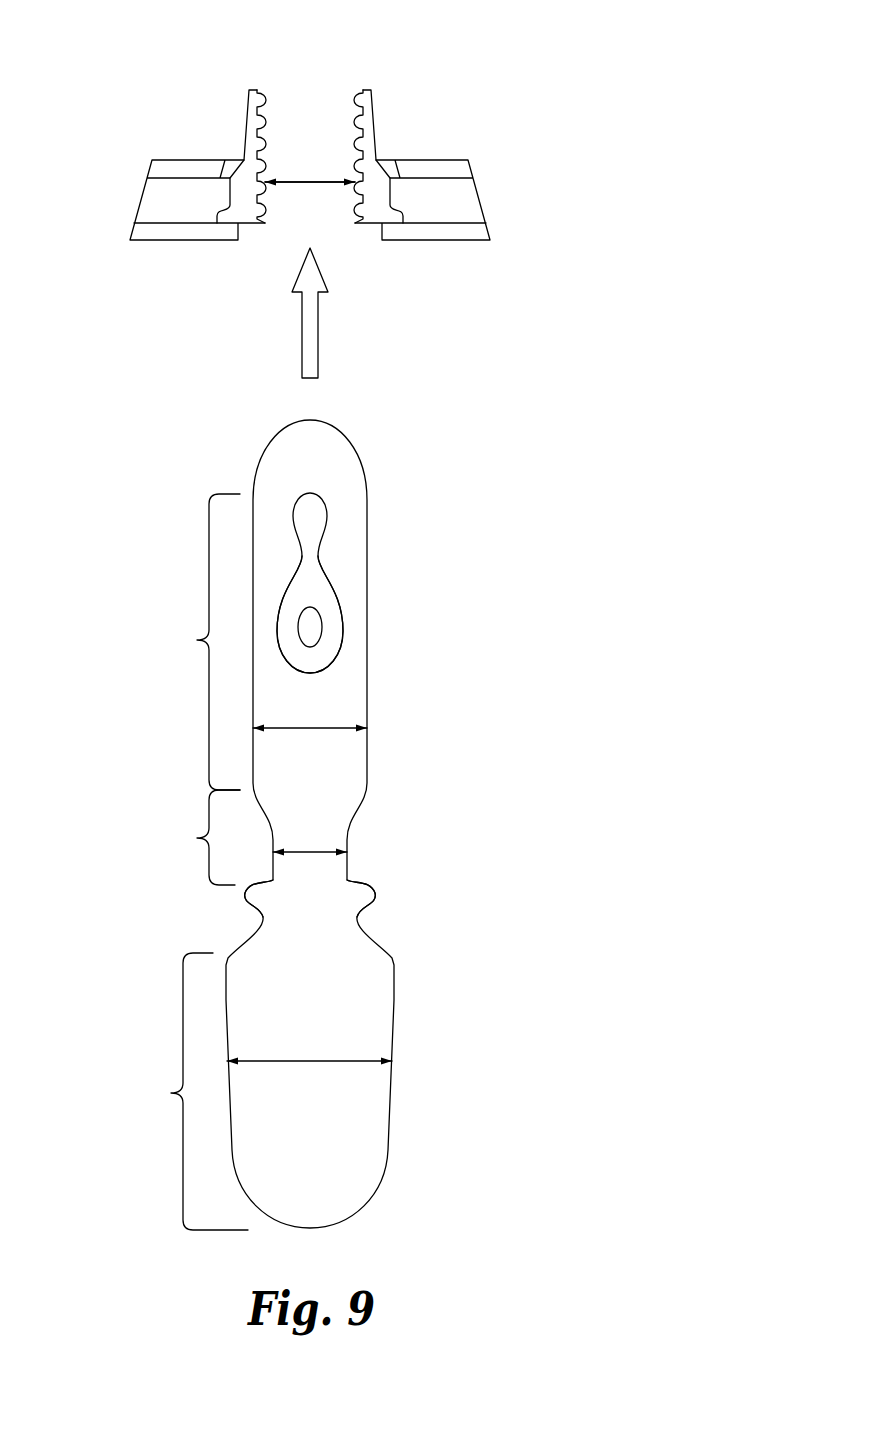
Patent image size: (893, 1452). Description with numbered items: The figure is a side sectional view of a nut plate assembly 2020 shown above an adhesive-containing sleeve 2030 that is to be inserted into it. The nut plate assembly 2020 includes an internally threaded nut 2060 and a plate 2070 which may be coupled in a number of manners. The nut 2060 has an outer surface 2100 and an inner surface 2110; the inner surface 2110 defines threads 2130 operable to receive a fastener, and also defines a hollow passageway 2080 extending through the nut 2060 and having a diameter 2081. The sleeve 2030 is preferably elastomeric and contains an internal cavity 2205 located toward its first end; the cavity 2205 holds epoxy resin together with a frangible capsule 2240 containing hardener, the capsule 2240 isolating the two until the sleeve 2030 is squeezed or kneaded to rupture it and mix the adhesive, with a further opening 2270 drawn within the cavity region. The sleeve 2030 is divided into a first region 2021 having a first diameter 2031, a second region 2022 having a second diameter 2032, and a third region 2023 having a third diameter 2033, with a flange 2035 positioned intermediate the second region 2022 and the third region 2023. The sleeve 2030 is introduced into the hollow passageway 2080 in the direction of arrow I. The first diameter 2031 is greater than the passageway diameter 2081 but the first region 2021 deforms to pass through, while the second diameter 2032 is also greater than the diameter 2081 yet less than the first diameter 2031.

The nut plate assembly 2020 is at (390, 122).
The sleeve 2030 is at (342, 438).
The first diameter 2031 is at (293, 730).
The second diameter 2032 is at (305, 855).
The third diameter 2033 is at (307, 1063).
The flange 2035 is at (375, 887).
The first region 2021 is at (192, 642).
The second region 2022 is at (191, 837).
The third region 2023 is at (181, 1091).
The internally threaded nut 2060 is at (249, 97).
The plate 2070 is at (181, 160).
The hollow passageway 2080 is at (309, 78).
The diameter of the hollow passageway 2081 is at (303, 184).
The outer surface 2100 is at (372, 132).
The inner surface 2110 is at (351, 112).
The threads 2130 is at (266, 110).
The internal cavity 2205 is at (308, 577).
The frangible capsule 2240 is at (311, 623).
The lower lobe of opening 2270 is at (322, 669).
The arrow I is at (300, 350).